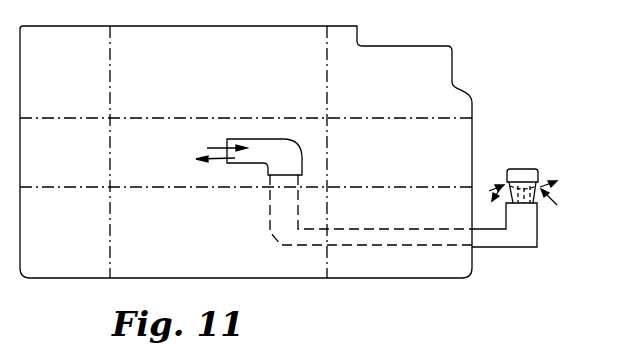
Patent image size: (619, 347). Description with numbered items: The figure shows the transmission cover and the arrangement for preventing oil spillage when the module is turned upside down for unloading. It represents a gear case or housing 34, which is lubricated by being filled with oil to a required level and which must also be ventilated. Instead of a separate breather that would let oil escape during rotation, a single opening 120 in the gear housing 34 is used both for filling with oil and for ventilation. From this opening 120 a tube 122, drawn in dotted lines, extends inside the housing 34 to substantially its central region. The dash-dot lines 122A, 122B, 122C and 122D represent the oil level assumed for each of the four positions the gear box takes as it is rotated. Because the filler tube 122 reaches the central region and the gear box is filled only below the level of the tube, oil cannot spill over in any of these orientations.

The gear case or housing 34 is at (413, 34).
The opening 120 is at (528, 169).
The tube 122 is at (370, 230).
The oil level (dash-dot line) 122A is at (97, 186).
The oil level (dash-dot line) 122B is at (327, 160).
The oil level (dash-dot line) 122C is at (407, 118).
The oil level (dash-dot line) 122D is at (110, 85).